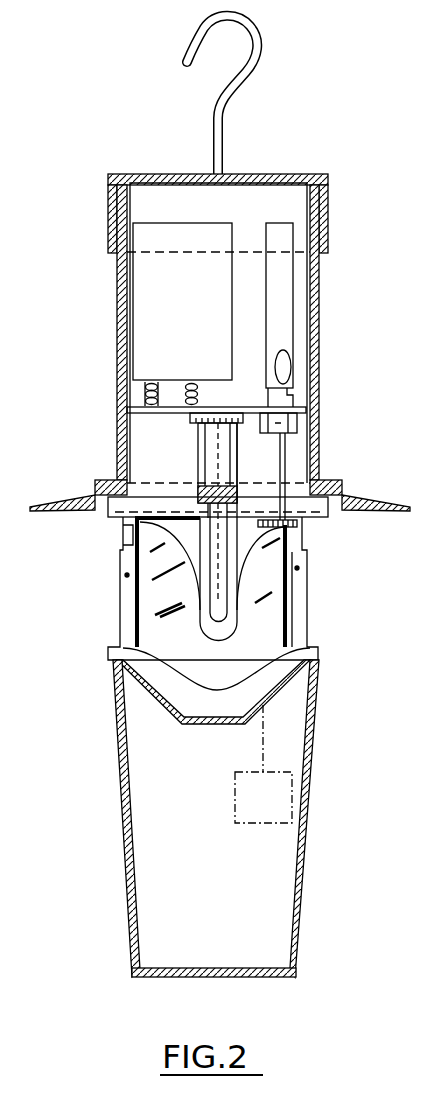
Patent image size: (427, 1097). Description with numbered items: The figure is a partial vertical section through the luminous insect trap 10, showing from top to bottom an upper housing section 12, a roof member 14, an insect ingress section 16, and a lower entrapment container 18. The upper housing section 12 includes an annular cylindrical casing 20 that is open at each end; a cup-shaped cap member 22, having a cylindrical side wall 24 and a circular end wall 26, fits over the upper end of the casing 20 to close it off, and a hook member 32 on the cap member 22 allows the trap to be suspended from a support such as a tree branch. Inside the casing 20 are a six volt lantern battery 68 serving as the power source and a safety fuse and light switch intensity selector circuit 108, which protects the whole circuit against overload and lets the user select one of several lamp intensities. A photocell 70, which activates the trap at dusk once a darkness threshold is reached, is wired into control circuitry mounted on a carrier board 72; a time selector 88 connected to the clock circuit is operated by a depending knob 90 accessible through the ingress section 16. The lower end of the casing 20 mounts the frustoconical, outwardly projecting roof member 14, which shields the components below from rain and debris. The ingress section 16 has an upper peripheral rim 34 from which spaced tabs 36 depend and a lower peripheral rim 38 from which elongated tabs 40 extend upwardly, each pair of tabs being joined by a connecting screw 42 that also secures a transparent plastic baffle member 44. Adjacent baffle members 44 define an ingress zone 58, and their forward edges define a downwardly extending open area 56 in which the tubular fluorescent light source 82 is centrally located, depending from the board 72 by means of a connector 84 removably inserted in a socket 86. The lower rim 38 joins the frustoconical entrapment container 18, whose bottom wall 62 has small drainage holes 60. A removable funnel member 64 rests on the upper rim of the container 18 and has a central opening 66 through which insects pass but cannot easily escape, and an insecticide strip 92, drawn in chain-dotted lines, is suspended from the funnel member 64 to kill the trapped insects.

The luminous insect trap 10 is at (247, 152).
The upper housing section 12 is at (112, 287).
The roof member 14 is at (90, 480).
The insect ingress section 16 is at (87, 593).
The lower entrapment container 18 is at (110, 852).
The casing 20 is at (117, 334).
The cap member 22 is at (106, 218).
The side wall 24 is at (328, 206).
The end wall 26 is at (168, 172).
The hook member 32 is at (263, 60).
The upper peripheral rim 34 is at (316, 508).
The tabs 36 is at (128, 539).
The lower peripheral rim 38 is at (325, 647).
The elongated tabs 40 is at (150, 608).
The connecting screw 42 is at (125, 575).
The baffle members 44 is at (150, 636).
The open area 56 is at (245, 592).
The ingress zone 58 is at (140, 651).
The drainage holes 60 is at (167, 977).
The bottom wall 62 is at (208, 968).
The funnel member 64 is at (283, 694).
The central opening 66 is at (215, 725).
The lantern battery 68 is at (155, 299).
The photocell 70 is at (288, 366).
The carrier board 72 is at (296, 401).
The fluorescent light source 82 is at (240, 553).
The connector 84 is at (218, 453).
The socket 86 is at (236, 430).
The time selector 88 is at (298, 426).
The knob 90 is at (296, 530).
The insecticide strip 92 is at (275, 803).
The safety fuse and light switch intensity selector circuit 108 is at (280, 291).